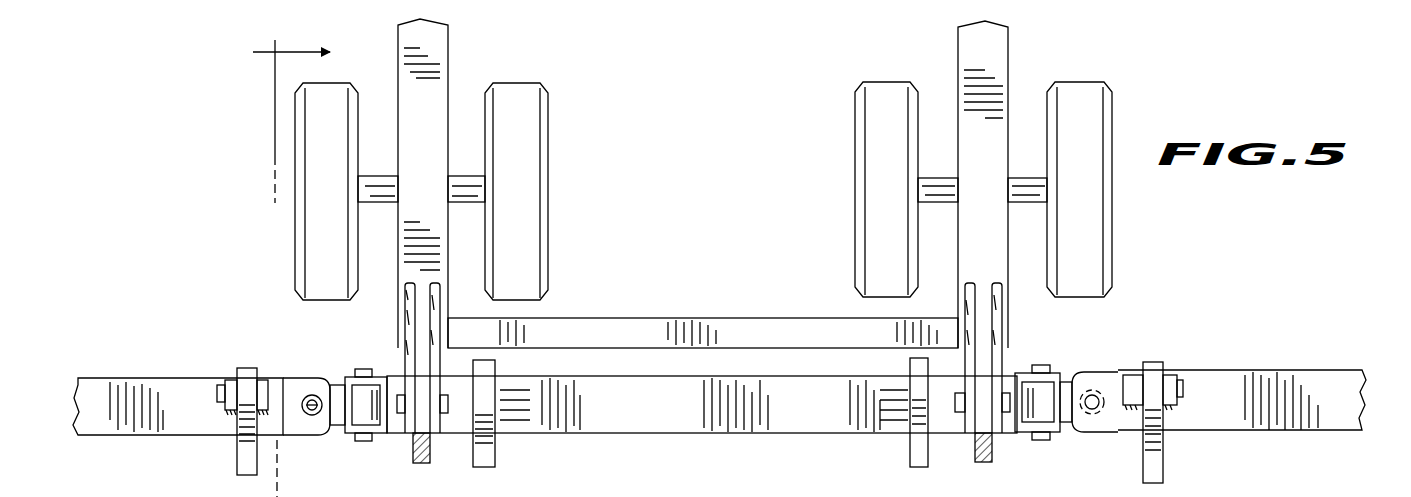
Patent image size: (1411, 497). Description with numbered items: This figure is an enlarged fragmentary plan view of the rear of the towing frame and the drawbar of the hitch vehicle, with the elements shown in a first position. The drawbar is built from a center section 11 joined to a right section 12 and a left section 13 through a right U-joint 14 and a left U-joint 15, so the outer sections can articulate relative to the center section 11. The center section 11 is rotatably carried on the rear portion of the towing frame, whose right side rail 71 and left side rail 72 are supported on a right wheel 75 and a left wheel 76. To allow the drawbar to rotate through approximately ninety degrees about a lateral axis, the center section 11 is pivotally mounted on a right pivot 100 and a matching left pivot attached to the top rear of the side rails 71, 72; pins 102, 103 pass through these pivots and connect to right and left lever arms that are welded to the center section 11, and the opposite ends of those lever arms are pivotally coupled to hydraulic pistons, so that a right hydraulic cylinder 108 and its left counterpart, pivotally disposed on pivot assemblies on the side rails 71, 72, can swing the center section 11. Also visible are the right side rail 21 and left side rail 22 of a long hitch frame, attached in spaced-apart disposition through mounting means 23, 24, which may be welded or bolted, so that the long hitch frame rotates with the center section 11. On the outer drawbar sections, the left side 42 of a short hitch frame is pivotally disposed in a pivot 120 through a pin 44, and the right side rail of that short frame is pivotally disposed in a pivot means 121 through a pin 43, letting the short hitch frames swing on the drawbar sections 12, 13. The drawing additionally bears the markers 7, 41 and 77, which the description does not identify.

The section line 7- 7 is at (267, 266).
The center section 11 is at (722, 433).
The right section 12 is at (1314, 378).
The left section 13 is at (100, 378).
The right U-joint 14 is at (1086, 362).
The left U-joint 15 is at (341, 388).
The right side rail 21 is at (910, 459).
The left side rail 22 is at (497, 448).
The mounting means 23 is at (906, 405).
The mounting means 24 is at (502, 402).
The left end plate 41 is at (237, 466).
The left side 42 is at (1163, 461).
The pin 43 is at (218, 396).
The pin 44 is at (1184, 386).
The right side rail 71 is at (968, 55).
The left side rail 72 is at (448, 72).
The right wheel 75 is at (1114, 110).
The left wheel 76 is at (554, 158).
The cross bar 77 is at (732, 318).
The right pivot 100 is at (1005, 368).
The pin 102 is at (1005, 415).
The pin 103 is at (448, 418).
The right hydraulic cylinder 108 is at (405, 357).
The pivot 120 is at (1168, 371).
The pivot means 121 is at (232, 377).